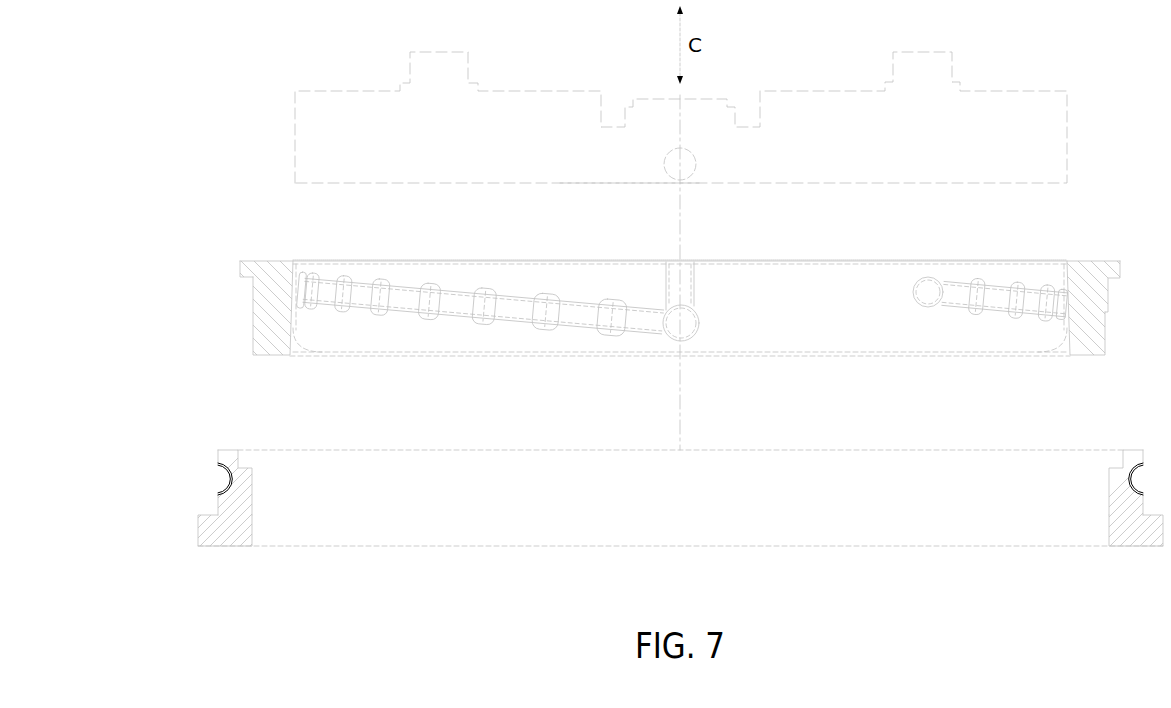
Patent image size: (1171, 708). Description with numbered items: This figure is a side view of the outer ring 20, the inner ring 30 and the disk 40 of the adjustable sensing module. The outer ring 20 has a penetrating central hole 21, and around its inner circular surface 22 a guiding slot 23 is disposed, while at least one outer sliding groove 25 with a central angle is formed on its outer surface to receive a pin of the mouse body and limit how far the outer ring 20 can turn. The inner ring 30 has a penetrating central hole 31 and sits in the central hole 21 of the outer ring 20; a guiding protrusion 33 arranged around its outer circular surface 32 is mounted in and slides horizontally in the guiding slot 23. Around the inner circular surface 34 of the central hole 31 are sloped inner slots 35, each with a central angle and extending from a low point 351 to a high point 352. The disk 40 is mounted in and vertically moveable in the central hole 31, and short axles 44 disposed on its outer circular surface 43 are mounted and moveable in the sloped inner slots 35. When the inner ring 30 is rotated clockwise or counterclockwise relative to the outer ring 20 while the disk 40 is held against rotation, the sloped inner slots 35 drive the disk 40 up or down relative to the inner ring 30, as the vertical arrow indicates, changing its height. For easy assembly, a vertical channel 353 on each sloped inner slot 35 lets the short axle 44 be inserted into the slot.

The outer ring 20 is at (660, 504).
The central hole 21 is at (918, 503).
The inner circular surface 22 is at (253, 487).
The guiding slot 23 is at (253, 505).
The outer sliding groove 25 is at (223, 477).
The inner ring 30 is at (660, 312).
The central hole 31 is at (810, 343).
The outer circular surface 32 is at (253, 335).
The guiding protrusion 33 is at (253, 316).
The inner circular surface 34 is at (577, 343).
The sloped inner slot 35 is at (516, 312).
The low point 351 is at (685, 325).
The high point 352 is at (303, 290).
The vertical channel 353 is at (685, 268).
The disk 40 is at (953, 64).
The outer circular surface 43 is at (621, 174).
The short axle 44 is at (668, 171).